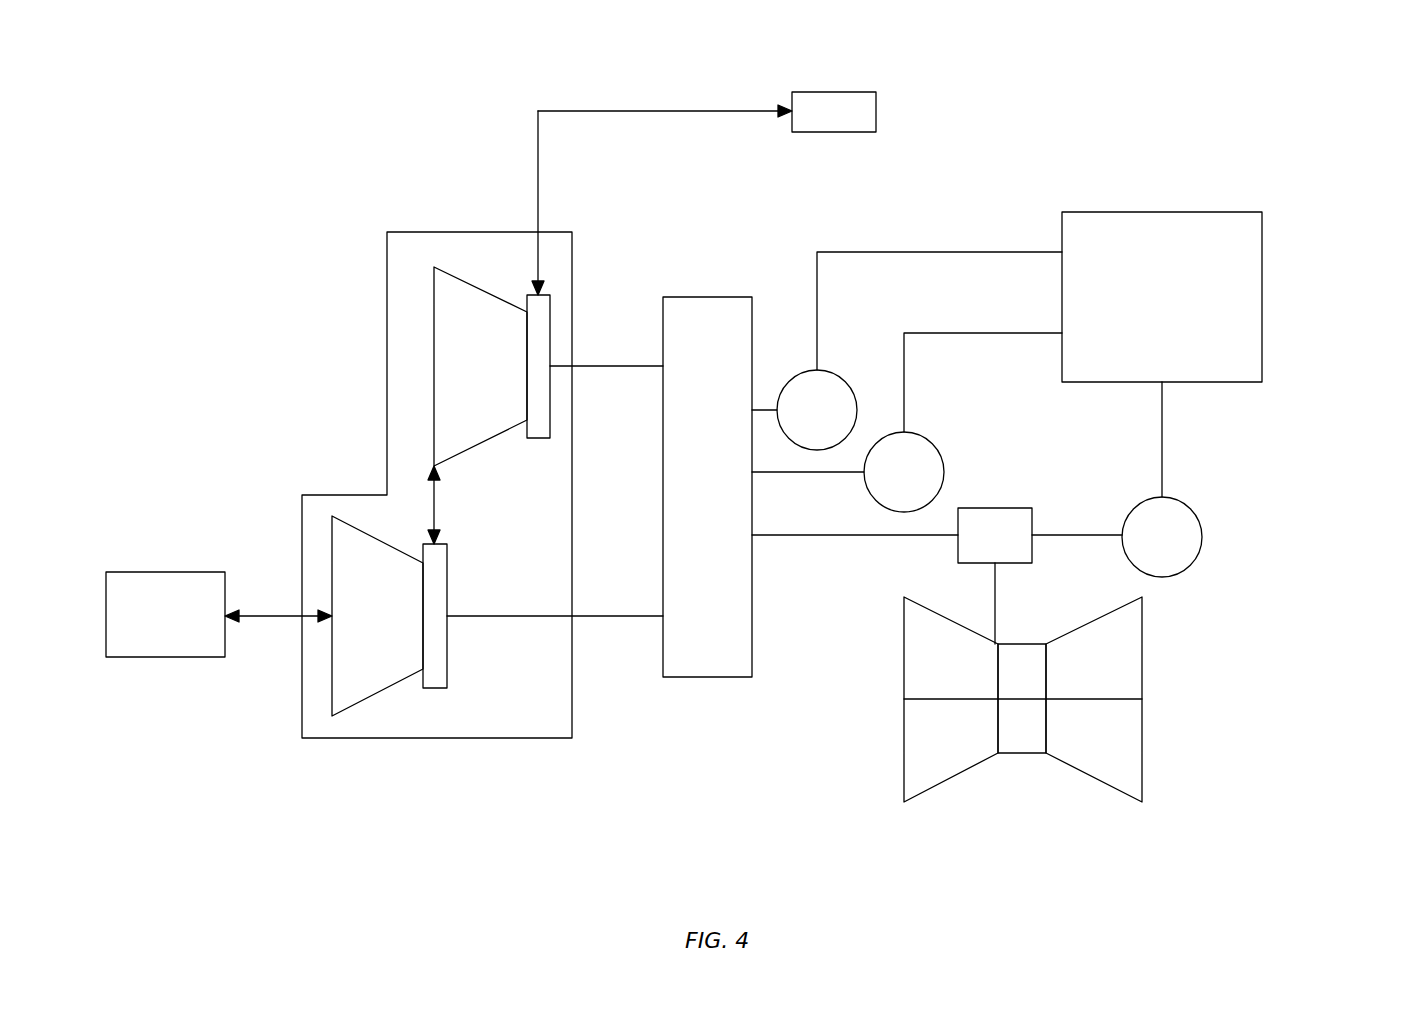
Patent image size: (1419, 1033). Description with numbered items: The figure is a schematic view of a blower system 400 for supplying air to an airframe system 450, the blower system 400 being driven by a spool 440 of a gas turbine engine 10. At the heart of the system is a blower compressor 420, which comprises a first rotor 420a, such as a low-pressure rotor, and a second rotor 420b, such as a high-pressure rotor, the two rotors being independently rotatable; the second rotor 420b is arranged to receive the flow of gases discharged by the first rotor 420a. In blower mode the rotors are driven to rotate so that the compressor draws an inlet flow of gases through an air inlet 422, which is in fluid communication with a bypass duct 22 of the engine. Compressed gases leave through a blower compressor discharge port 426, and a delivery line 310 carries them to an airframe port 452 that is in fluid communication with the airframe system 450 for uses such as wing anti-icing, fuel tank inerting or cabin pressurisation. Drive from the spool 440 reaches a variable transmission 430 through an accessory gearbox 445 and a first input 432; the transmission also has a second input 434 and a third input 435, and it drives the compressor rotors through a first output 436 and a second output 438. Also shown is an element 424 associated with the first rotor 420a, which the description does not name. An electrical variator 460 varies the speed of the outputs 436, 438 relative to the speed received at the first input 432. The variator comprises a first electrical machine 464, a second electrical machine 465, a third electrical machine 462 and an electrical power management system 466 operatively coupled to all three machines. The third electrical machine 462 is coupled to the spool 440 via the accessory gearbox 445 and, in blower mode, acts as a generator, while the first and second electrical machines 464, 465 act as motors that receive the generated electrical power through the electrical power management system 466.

The gas turbine engine 10 is at (1200, 622).
The bypass duct 22 is at (165, 614).
The delivery line 310 is at (538, 116).
The blower system 400 is at (1105, 106).
The blower compressor 420 is at (317, 408).
The first rotor 420a is at (372, 702).
The second rotor 420b is at (465, 282).
The air inlet 422 is at (232, 622).
The rotor 424 is at (435, 616).
The blower compressor discharge port 426 is at (552, 292).
The variable transmission 430 is at (700, 297).
The first input 432 is at (752, 535).
The second input 434 is at (752, 472).
The third input 435 is at (752, 410).
The first output 436 is at (663, 612).
The second output 438 is at (663, 360).
The spool 440 is at (1102, 699).
The accessory gearbox 445 is at (995, 576).
The airframe system 450 is at (843, 92).
The airframe port 452 is at (780, 106).
The electrical variator 460 is at (1290, 322).
The third electrical machine 462 is at (1203, 515).
The first electrical machine 464 is at (930, 437).
The second electrical machine 465 is at (817, 372).
The electrical power management system 466 is at (1162, 297).